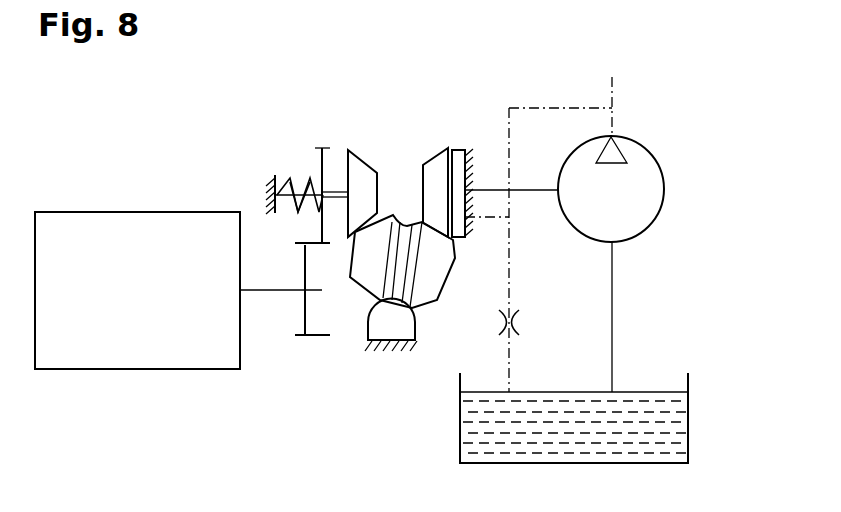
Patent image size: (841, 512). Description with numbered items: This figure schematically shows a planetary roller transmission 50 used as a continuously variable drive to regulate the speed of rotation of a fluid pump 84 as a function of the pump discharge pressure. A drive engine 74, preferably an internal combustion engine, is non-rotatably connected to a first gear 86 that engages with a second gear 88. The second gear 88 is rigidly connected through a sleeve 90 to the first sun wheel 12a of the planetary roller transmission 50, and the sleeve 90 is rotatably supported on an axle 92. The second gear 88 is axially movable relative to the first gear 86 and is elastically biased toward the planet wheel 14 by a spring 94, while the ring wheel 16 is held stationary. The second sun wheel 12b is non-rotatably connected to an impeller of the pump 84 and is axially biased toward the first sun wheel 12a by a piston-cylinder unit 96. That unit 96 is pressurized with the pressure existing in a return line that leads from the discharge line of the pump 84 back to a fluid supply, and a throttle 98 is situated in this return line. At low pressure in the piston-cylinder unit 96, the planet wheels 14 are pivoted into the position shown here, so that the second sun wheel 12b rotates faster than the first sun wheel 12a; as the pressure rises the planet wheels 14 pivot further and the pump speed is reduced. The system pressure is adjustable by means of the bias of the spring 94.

The drive engine 74 is at (144, 225).
The first gear 86 is at (318, 338).
The second gear 88 is at (320, 148).
The sleeve 90 is at (332, 191).
The axle 92 is at (283, 193).
The spring 94 is at (290, 214).
The first sun wheel 12a is at (376, 172).
The second sun wheel 12b is at (430, 172).
The piston-cylinder unit 96 is at (458, 160).
The planet wheel 14 is at (365, 281).
The ring wheel 16 is at (388, 345).
The planetary roller transmission 50 is at (444, 350).
The fluid pump 84 is at (650, 190).
The throttle 98 is at (520, 326).